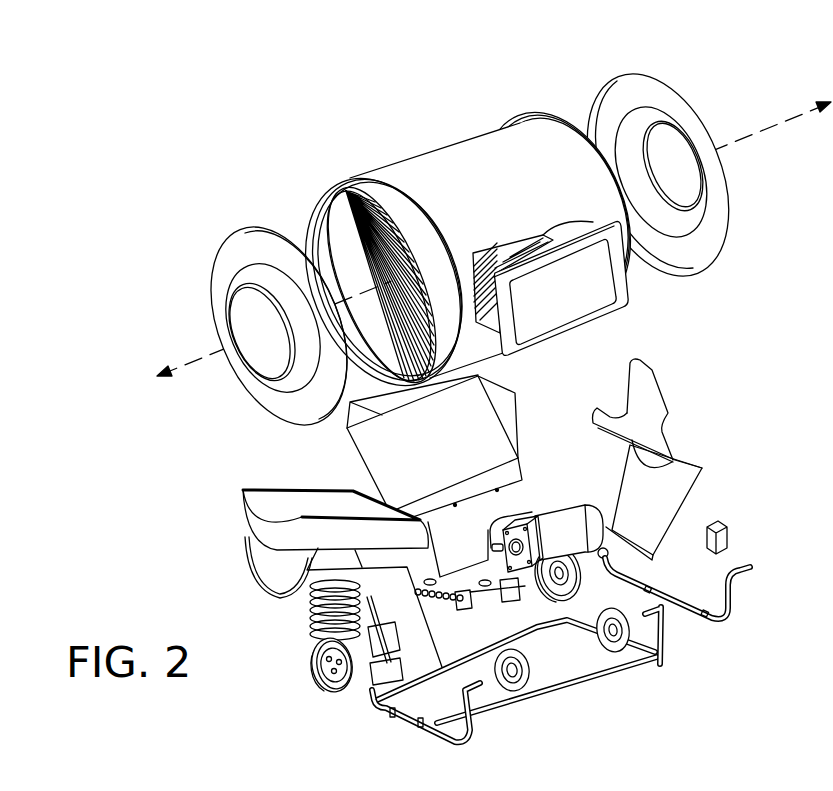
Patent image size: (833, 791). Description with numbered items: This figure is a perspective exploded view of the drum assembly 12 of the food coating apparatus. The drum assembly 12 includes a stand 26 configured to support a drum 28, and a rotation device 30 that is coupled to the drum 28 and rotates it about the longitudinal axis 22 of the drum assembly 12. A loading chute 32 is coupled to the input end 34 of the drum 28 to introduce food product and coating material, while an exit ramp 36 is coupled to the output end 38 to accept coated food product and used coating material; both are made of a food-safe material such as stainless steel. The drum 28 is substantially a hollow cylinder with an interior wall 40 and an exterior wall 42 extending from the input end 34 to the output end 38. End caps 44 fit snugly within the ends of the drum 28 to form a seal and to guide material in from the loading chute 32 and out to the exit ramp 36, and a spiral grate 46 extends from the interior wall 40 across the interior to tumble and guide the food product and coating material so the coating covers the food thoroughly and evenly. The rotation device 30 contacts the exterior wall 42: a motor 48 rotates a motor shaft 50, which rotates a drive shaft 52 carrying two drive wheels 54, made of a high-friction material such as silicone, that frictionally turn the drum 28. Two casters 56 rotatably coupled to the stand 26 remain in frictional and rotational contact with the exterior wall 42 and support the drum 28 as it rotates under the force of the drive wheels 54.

The drum assembly 12 is at (126, 253).
The longitudinal axis 22 is at (749, 125).
The stand 26 is at (662, 625).
The drum 28 is at (432, 176).
The rotation device 30 is at (330, 704).
The loading chute 32 is at (262, 502).
The input end 34 is at (323, 243).
The exit ramp 36 is at (655, 408).
The output end 38 is at (557, 112).
The interior wall 40 is at (357, 365).
The exterior wall 42 is at (504, 188).
The end caps 44 is at (650, 94).
The spiral grate 46 is at (364, 178).
The motor 48 is at (562, 525).
The motor shaft 50 is at (505, 530).
The drive shaft 52 is at (457, 633).
The drive wheels 54 is at (318, 660).
The casters 56 is at (519, 688).